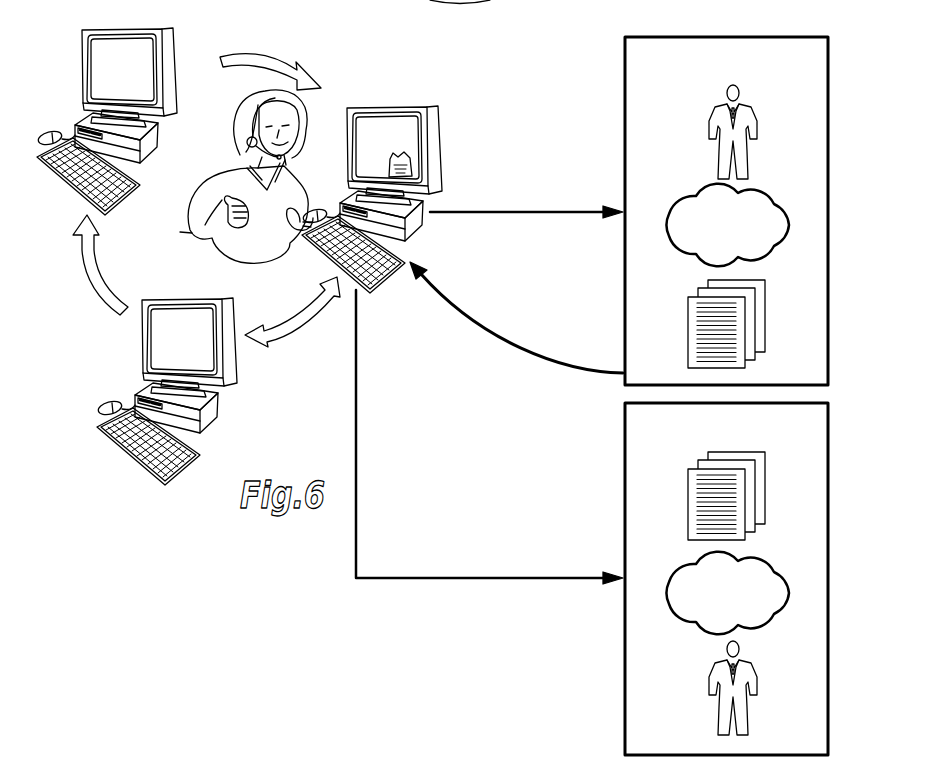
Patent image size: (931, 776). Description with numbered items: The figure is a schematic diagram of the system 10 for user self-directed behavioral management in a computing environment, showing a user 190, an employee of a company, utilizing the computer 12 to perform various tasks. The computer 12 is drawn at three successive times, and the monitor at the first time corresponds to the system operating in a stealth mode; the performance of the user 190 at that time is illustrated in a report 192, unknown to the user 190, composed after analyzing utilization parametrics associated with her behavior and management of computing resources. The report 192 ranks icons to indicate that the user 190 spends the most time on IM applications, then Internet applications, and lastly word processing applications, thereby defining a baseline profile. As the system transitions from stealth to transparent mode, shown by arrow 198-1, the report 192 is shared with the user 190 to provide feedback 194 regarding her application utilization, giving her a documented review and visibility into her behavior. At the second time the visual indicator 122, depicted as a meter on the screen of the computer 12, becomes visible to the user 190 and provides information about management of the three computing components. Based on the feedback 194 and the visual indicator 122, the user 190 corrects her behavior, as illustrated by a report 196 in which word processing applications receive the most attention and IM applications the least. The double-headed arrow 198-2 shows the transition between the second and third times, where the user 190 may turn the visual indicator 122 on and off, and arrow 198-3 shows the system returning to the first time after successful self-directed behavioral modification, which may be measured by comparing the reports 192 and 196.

The system 10 is at (491, 87).
The computer 12 is at (171, 85).
The visual indicator 122 is at (410, 150).
The user 190 is at (197, 228).
The report 192 is at (625, 125).
The feedback 194 is at (503, 350).
The report 196 is at (625, 488).
The arrow 198-1 is at (290, 60).
The double-headed arrow 198-2 is at (307, 327).
The arrow 198-3 is at (83, 278).